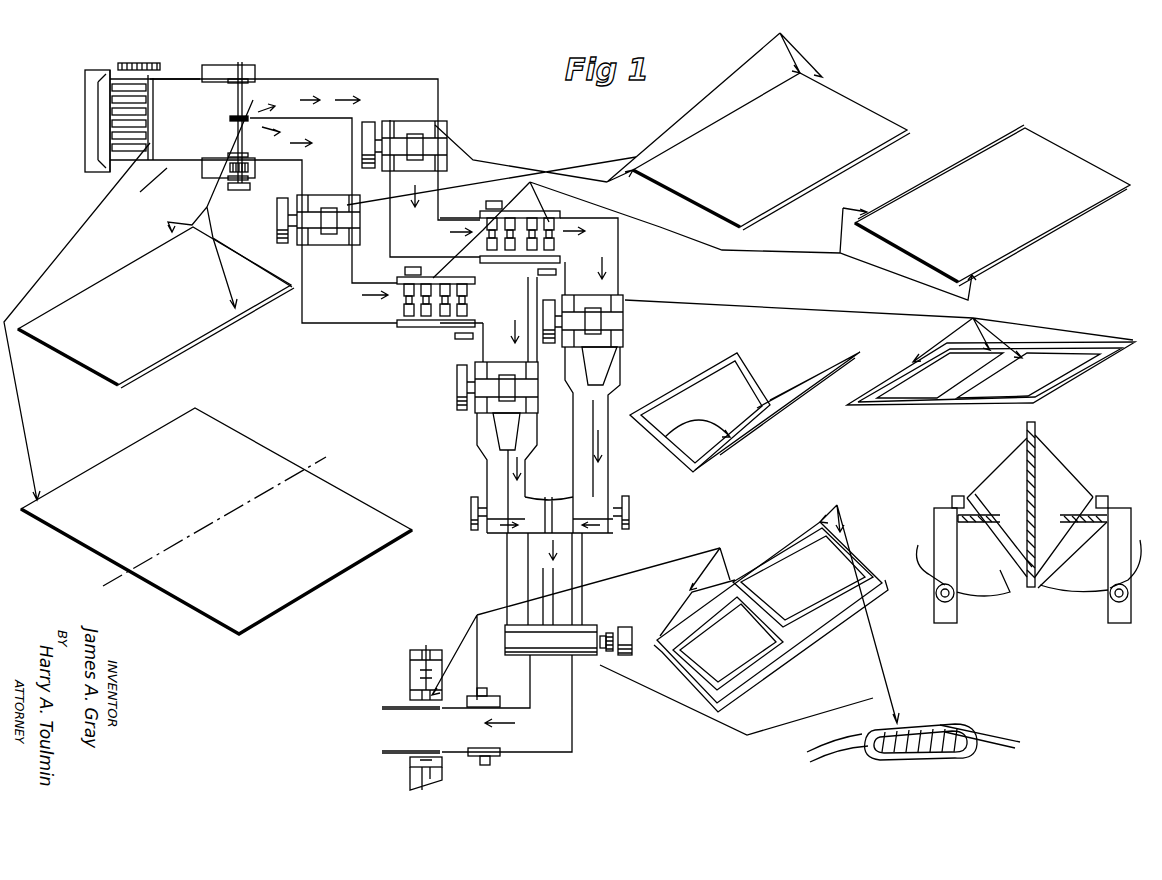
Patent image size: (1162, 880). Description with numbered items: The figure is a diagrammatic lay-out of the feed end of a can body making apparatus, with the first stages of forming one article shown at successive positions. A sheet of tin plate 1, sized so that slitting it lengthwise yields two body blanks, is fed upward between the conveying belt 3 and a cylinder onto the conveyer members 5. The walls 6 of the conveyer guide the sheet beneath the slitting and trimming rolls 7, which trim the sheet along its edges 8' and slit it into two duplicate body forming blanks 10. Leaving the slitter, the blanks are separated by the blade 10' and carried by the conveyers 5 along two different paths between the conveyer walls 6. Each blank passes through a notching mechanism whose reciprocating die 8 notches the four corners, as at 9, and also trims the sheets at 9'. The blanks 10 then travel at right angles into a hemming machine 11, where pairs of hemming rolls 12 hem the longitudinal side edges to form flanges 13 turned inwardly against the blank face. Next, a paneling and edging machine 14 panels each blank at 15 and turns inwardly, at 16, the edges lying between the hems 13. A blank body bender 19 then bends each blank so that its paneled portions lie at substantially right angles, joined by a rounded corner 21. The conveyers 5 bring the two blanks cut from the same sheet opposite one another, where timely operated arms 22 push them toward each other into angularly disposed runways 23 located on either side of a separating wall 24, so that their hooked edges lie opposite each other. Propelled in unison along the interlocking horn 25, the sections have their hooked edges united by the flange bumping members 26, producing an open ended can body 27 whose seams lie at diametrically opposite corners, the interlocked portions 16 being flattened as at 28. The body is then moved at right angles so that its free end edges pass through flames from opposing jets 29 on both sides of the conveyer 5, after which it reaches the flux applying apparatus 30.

The sheet of tin plate 1 is at (186, 586).
The conveying belt 3 is at (118, 131).
The conveyer members 5 is at (587, 710).
The conveyer walls 6 is at (175, 78).
The slitting and trimming rolls 7 is at (236, 80).
The reciprocating die 8 is at (362, 182).
The trimmed edges 8' is at (208, 520).
The notched corners 9 is at (896, 214).
The trimmed portion 9' is at (894, 163).
The body forming blanks 10 is at (567, 266).
The separating blade 10' is at (278, 76).
The hemming machine 11 is at (548, 216).
The hemming rolls 12 is at (557, 245).
The hems or flanges 13 is at (740, 380).
The paneling and edging machine 14 is at (605, 304).
The panel 15 is at (1098, 318).
The inturned edges 16 is at (685, 382).
The blank body bender 19 is at (623, 357).
The rounded corner 21 is at (695, 470).
The timely operated arms 22 is at (471, 512).
The runways 23 is at (517, 527).
The separating wall 24 is at (549, 497).
The interlocking horn 25 is at (553, 582).
The flange bumping members 26 is at (575, 637).
The open ended can body 27 is at (822, 575).
The flattened interlocked seam 28 is at (815, 518).
The jets 29 is at (487, 700).
The flux applying apparatus 30 is at (410, 672).